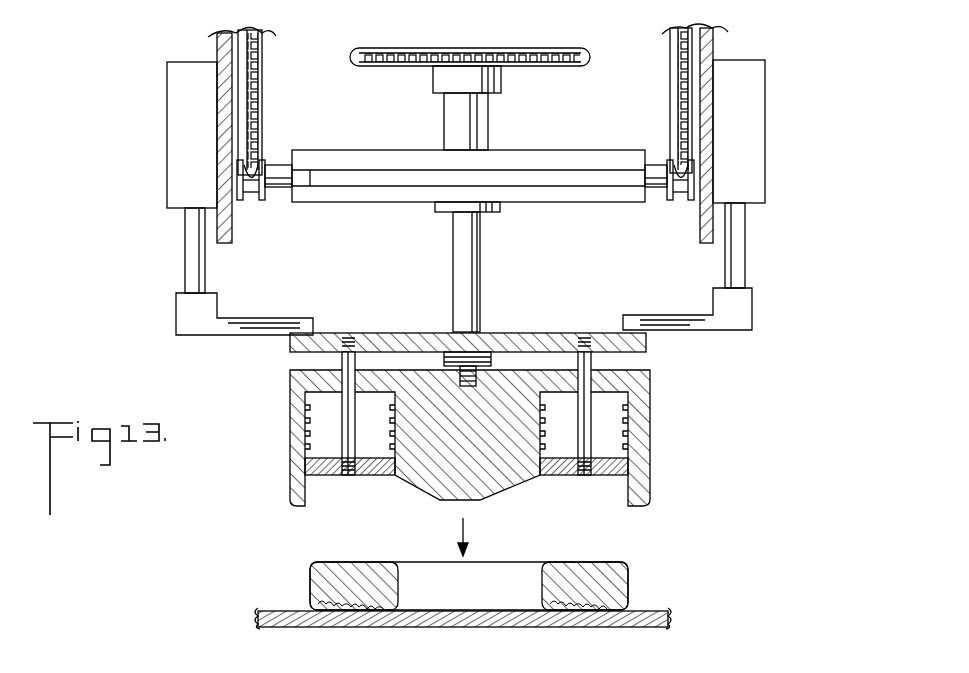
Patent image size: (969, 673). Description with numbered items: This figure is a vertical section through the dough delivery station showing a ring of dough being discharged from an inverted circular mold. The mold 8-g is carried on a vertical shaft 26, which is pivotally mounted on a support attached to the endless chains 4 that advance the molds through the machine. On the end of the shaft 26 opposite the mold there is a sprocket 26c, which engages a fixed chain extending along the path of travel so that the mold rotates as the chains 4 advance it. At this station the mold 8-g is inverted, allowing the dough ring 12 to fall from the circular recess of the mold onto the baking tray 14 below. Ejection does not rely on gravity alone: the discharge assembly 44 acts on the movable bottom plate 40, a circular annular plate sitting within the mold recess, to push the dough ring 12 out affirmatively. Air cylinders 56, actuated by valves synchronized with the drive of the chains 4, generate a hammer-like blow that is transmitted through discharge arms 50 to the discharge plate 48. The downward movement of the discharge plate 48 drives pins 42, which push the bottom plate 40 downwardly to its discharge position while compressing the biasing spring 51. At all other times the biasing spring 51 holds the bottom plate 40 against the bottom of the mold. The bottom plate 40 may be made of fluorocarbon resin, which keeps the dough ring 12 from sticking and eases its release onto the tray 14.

The sprocket 26c is at (548, 52).
The vertical shaft 26 is at (476, 238).
The chains 4 is at (264, 200).
The discharge assembly 44 is at (158, 95).
The air cylinders 56 is at (178, 73).
The discharge arms 50 is at (180, 300).
The discharge plate 48 is at (610, 330).
The biasing spring 51 is at (489, 348).
The pins 42 is at (345, 380).
The mold 8-g is at (300, 466).
The movable bottom plate 40 is at (325, 475).
The dough ring 12 is at (625, 576).
The baking tray 14 is at (289, 611).